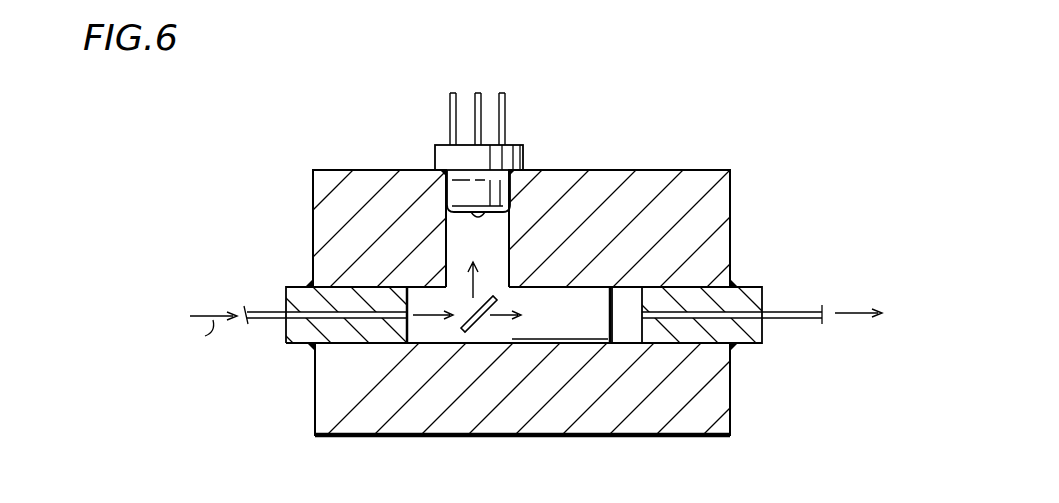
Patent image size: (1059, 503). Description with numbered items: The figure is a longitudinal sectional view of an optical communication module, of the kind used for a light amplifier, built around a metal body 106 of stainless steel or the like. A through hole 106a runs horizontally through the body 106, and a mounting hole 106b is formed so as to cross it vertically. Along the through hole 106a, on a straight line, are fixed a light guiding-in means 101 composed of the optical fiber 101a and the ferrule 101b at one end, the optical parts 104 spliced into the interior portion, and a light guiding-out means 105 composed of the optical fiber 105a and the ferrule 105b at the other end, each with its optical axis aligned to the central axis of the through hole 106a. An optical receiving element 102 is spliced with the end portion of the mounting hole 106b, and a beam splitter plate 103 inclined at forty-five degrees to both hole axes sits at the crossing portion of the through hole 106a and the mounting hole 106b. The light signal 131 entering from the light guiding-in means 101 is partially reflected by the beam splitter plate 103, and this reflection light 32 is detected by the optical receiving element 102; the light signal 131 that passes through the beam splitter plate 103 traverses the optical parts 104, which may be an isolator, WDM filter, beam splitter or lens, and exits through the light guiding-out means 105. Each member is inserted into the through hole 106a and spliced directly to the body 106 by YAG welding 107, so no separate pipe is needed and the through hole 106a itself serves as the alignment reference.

The reflection light 32 is at (481, 283).
The light guiding-in means 101 is at (311, 372).
The optical fiber 101a is at (305, 410).
The ferrule 101b is at (302, 343).
The optical receiving element 102 is at (452, 187).
The beam splitter plate 103 is at (476, 333).
The optical parts 104 is at (578, 342).
The light guiding-out means 105 is at (751, 266).
The optical fiber 105a is at (790, 312).
The ferrule 105b is at (742, 300).
The body 106 is at (642, 182).
The through hole 106a is at (633, 345).
The mounting hole 106b is at (442, 222).
The YAG welding 107 is at (311, 287).
The light signal 131 is at (218, 308).